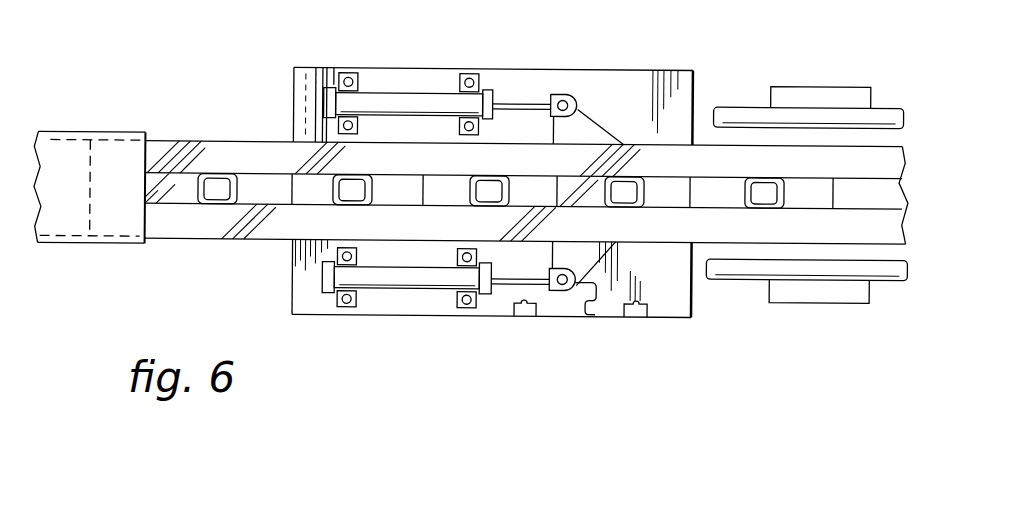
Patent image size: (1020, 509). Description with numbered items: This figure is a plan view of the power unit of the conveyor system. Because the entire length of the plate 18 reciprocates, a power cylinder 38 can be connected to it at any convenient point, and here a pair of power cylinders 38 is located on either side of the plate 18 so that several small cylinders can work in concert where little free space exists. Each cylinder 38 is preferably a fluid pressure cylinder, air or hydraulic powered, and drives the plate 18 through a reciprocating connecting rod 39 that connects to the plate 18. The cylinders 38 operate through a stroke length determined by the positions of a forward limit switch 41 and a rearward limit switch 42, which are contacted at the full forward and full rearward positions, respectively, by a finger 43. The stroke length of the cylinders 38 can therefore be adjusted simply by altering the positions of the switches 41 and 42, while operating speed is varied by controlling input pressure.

The plate 18 is at (636, 144).
The power cylinder 38 is at (378, 97).
The connecting rod 39 is at (582, 107).
The forward limit switch 41 is at (650, 313).
The rearward limit switch 42 is at (513, 310).
The finger 43 is at (590, 312).